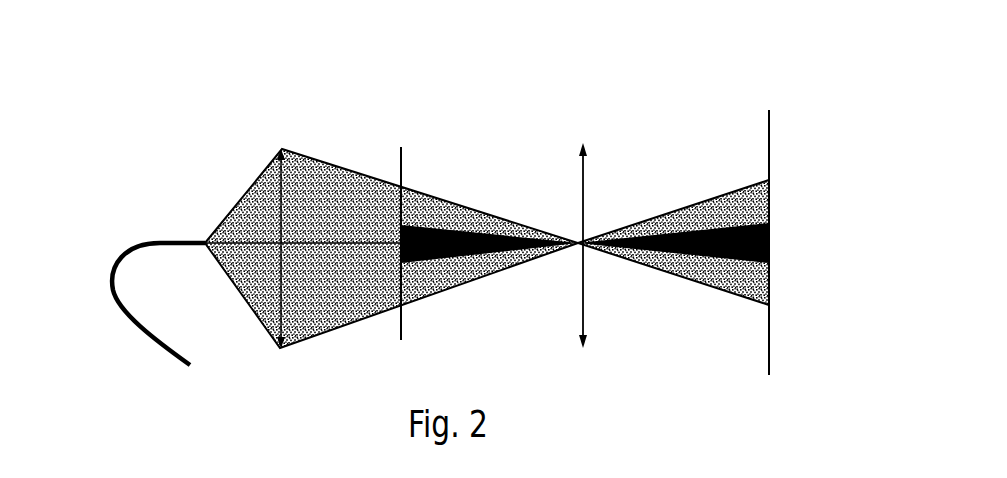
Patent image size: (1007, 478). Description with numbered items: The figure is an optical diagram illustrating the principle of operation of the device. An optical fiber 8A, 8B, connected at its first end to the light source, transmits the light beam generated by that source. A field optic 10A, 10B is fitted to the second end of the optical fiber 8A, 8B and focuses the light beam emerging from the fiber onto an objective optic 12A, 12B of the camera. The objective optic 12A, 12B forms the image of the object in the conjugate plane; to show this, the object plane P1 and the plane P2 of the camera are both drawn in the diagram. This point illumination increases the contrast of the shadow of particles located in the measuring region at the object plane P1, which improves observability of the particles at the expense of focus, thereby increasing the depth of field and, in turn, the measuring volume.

The optical fiber 8A is at (148, 338).
The optical fiber 8B is at (147, 337).
The field optic 10A is at (391, 200).
The field optic 10B is at (321, 170).
The objective optic 12A is at (654, 243).
The objective optic 12B is at (587, 185).
The object plane P1 is at (401, 315).
The plane of the camera P2 is at (769, 337).